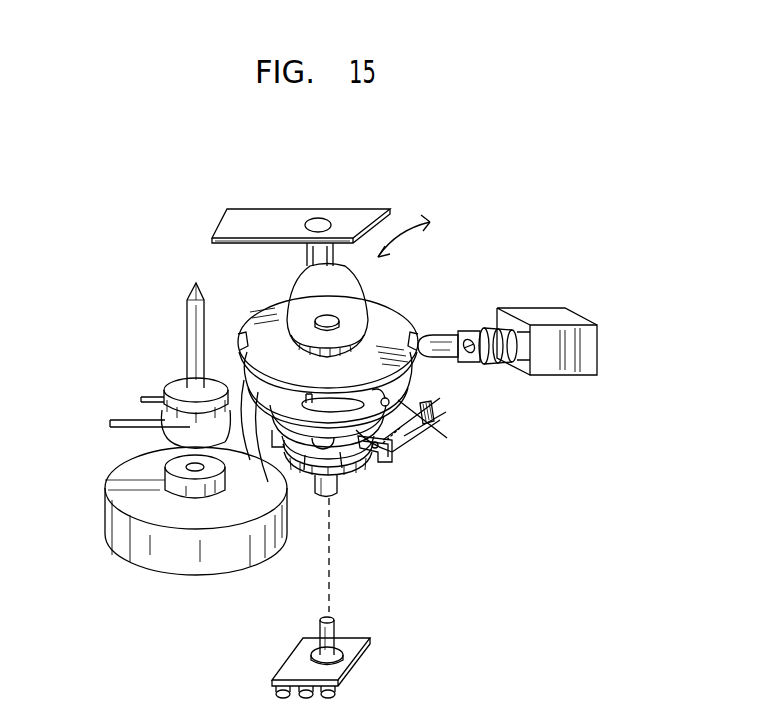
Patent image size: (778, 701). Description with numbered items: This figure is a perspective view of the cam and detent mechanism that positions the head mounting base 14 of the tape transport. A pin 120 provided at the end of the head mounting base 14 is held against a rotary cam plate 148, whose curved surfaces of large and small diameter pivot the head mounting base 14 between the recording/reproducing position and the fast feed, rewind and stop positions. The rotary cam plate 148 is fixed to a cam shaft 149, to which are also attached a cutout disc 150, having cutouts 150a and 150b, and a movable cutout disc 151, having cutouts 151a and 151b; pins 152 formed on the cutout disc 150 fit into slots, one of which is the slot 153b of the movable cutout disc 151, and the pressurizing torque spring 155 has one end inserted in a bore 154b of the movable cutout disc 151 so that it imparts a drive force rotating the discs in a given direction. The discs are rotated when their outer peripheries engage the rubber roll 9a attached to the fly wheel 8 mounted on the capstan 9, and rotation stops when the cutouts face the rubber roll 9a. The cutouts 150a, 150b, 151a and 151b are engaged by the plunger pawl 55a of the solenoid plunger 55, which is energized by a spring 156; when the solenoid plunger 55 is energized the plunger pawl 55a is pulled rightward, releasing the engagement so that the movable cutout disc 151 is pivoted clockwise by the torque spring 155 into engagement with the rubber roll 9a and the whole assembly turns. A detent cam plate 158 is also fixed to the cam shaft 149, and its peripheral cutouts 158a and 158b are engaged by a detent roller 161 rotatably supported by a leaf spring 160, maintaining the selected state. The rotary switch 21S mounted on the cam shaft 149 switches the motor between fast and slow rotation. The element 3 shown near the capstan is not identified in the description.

The arm 3 is at (128, 427).
The fly wheel 8 is at (131, 553).
The capstan 9 is at (187, 298).
The rubber roll 9a is at (182, 386).
The head mounting base 14 is at (270, 212).
The rotary switch 21S is at (350, 668).
The solenoid plunger 55 is at (548, 312).
The plunger pawl 55a is at (468, 356).
The pin 120 is at (330, 222).
The rotary cam plate 148 is at (298, 284).
The cam shaft 149 is at (337, 497).
The cutout disc 150 is at (416, 332).
The cutout 150a is at (242, 343).
The cutout 150b is at (419, 340).
The movable cutout disc 151 is at (402, 386).
The cutout 151a is at (280, 466).
The cutout 151b is at (436, 412).
The lower disk 152 is at (308, 472).
The slot 153b is at (344, 478).
The bore 154b is at (436, 446).
The pressurizing torque spring 155 is at (396, 450).
The spring 156 is at (487, 326).
The detent cam plate 158 is at (356, 506).
The cutout 158a is at (290, 400).
The cutout 158b is at (386, 484).
The leaf spring 160 is at (428, 422).
The detent roller 161 is at (374, 458).